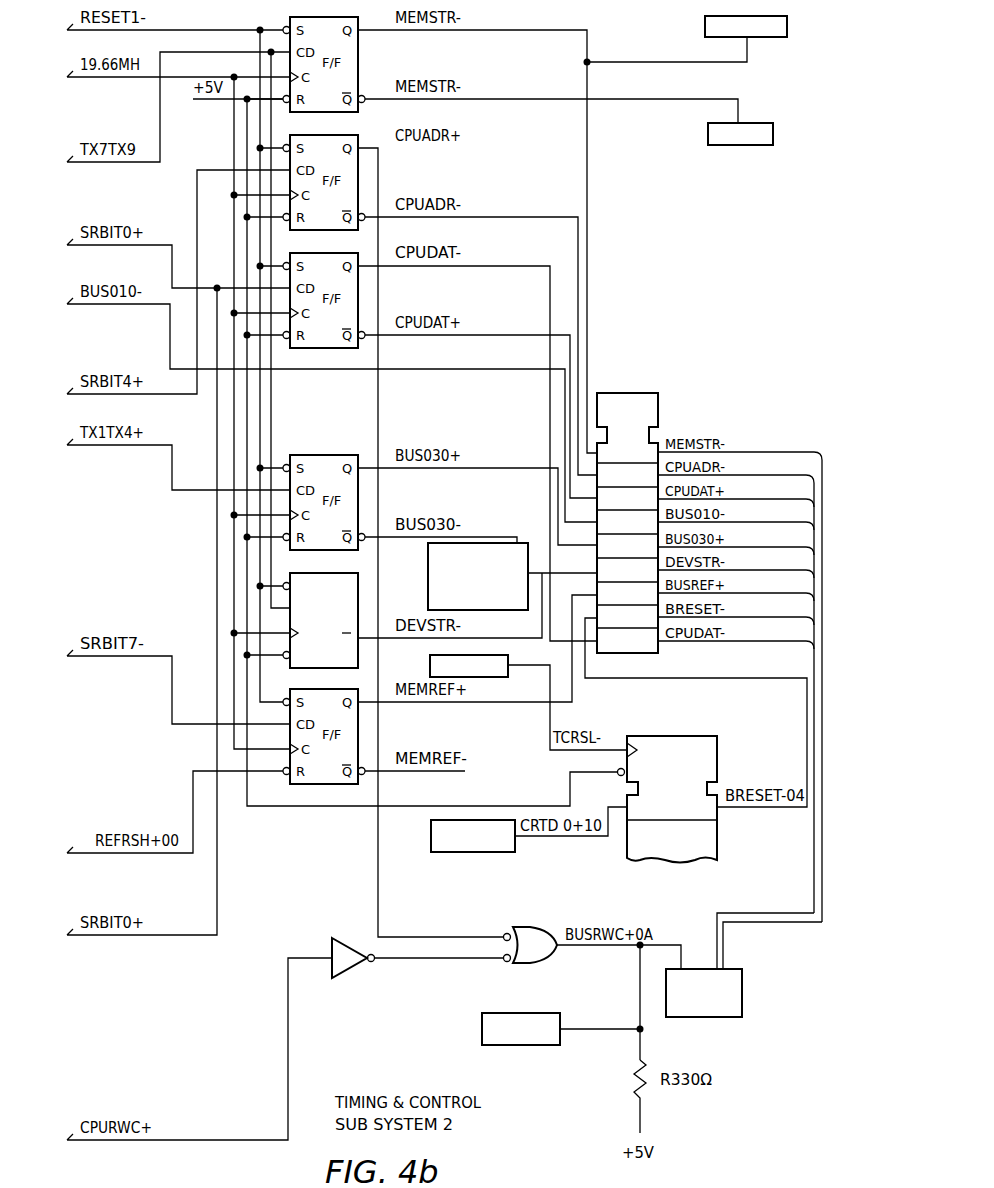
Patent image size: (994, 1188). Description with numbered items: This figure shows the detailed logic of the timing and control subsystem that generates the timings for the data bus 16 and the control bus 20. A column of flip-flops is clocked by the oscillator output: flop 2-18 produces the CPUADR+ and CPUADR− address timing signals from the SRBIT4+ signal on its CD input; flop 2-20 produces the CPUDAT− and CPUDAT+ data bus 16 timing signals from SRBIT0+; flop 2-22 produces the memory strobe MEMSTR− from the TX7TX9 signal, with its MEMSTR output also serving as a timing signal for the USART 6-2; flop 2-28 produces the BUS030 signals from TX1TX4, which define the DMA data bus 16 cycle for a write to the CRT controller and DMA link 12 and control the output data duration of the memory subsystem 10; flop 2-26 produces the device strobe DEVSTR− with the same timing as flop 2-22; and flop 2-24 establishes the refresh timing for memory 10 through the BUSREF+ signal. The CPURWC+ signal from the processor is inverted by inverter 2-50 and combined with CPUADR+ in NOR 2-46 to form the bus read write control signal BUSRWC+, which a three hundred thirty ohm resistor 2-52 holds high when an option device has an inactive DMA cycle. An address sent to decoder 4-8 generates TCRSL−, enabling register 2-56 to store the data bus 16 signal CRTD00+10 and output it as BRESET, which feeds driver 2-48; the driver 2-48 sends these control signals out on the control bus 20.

The flop 2-22 is at (360, 40).
The flop 2-18 is at (350, 135).
The flop 2-20 is at (358, 345).
The flop 2-28 is at (298, 455).
The flop 2-26 is at (358, 595).
The flop 2-24 is at (358, 735).
The driver 2-48 is at (657, 393).
The memory subsystem 10 is at (705, 34).
The USART 6-2 is at (708, 136).
The CRT controller and direct memory access (DMA) link 12 is at (510, 543).
The decoder 4-8 is at (500, 678).
The register 2-56 is at (717, 745).
The data bus 16 is at (458, 852).
The inverter 2-50 is at (352, 936).
The NOR 2-46 is at (526, 927).
The control bus 20 is at (742, 993).
The 330 ohm resistor 2-52 is at (630, 1084).